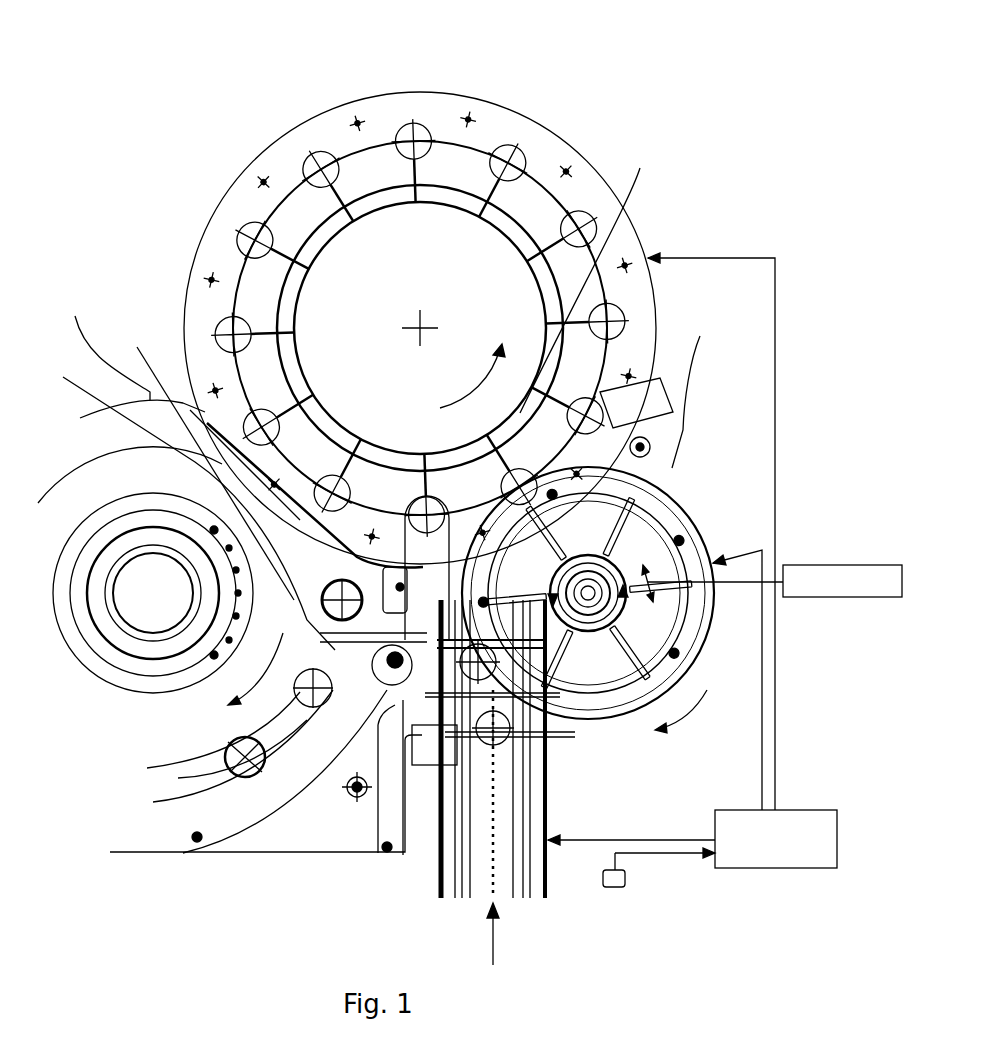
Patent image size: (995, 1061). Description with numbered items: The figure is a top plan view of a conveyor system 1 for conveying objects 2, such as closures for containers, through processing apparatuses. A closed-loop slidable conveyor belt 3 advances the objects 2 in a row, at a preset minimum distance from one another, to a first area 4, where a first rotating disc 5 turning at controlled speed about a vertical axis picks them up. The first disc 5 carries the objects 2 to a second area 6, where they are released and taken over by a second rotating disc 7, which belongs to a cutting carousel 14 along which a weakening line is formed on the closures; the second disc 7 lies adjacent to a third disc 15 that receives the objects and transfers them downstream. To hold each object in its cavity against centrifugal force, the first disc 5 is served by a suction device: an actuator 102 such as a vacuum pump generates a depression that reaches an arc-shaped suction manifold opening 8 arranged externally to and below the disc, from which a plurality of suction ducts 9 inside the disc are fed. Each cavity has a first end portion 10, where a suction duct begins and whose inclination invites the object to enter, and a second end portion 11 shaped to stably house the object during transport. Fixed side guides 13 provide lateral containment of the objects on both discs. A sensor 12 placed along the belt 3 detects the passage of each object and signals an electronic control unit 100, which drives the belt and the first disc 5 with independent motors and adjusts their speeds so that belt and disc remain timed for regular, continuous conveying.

The conveyor system 1 is at (150, 97).
The objects 2 is at (407, 128).
The conveyor belt 3 is at (478, 867).
The first area 4 is at (420, 692).
The first rotating disc 5 is at (700, 535).
The second area 6 is at (584, 279).
The second rotating disc 7 is at (520, 190).
The suction manifold opening 8 is at (560, 712).
The suction ducts 9 is at (695, 557).
The first end portion 10 is at (700, 660).
The second end portion 11 is at (700, 618).
The sensor 12 is at (627, 878).
The fixed side guide 13 is at (234, 893).
The carousel 14 is at (278, 133).
The third disc 15 is at (133, 355).
The control unit 100 is at (795, 868).
The actuator 102 is at (820, 597).